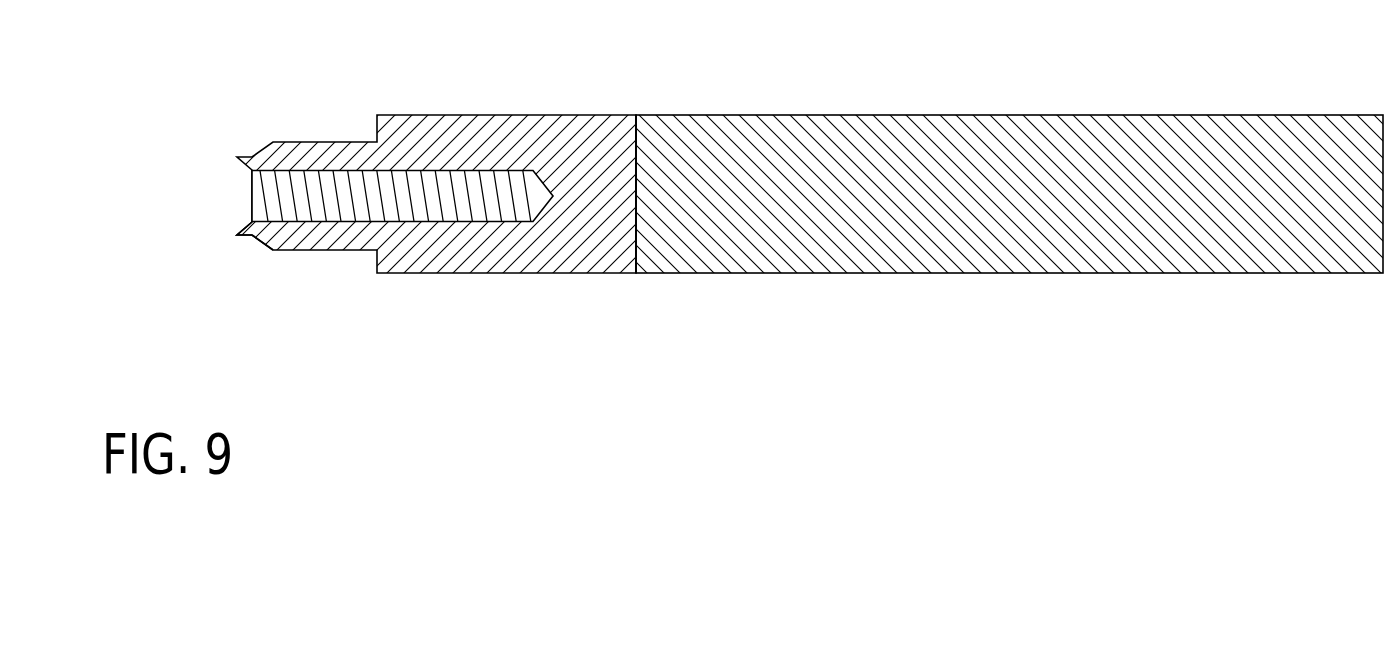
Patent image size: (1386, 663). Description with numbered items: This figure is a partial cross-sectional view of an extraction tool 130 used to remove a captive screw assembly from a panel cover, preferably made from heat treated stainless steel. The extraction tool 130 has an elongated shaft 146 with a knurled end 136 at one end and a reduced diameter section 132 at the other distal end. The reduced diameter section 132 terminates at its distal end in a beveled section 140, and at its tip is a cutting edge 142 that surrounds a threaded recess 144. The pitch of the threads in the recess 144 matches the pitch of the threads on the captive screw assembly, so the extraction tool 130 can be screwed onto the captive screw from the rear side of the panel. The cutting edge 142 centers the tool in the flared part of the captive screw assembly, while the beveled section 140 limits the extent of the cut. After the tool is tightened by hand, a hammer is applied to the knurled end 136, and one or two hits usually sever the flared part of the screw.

The extraction tool 130 is at (742, 191).
The reduced diameter section 132 is at (344, 250).
The knurled end 136 is at (1308, 273).
The beveled section 140 is at (266, 248).
The cutting edge 142 is at (246, 231).
The threaded recess 144 is at (250, 171).
The elongated shaft 146 is at (733, 273).